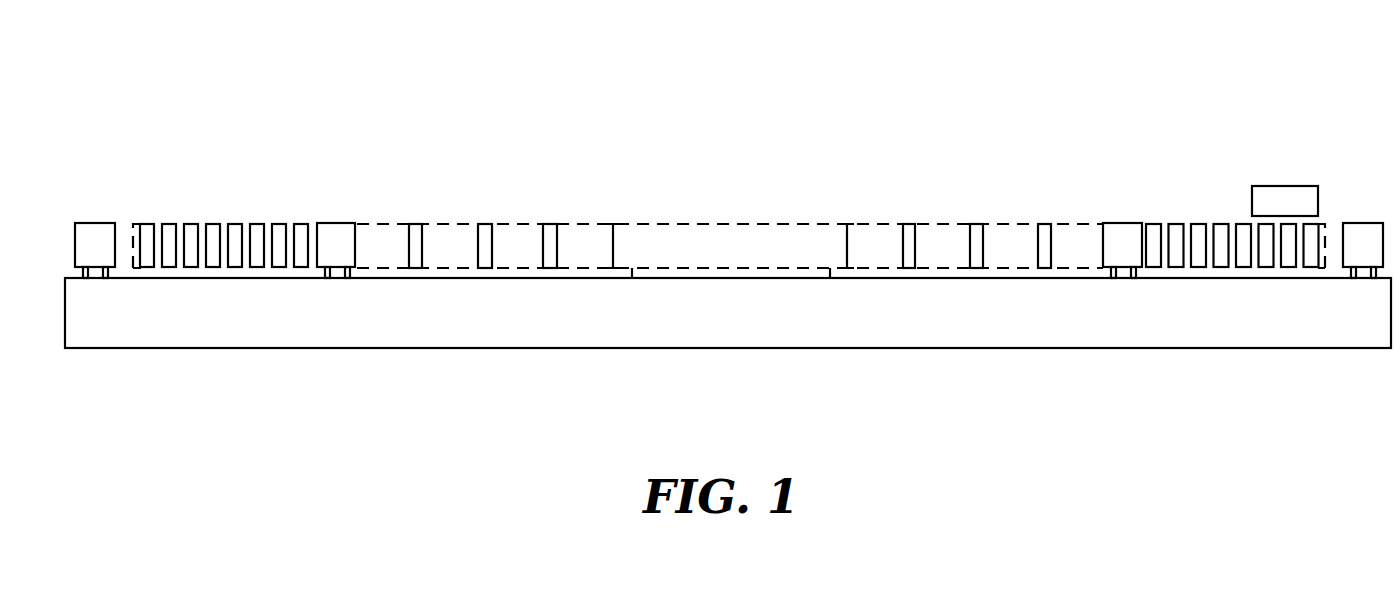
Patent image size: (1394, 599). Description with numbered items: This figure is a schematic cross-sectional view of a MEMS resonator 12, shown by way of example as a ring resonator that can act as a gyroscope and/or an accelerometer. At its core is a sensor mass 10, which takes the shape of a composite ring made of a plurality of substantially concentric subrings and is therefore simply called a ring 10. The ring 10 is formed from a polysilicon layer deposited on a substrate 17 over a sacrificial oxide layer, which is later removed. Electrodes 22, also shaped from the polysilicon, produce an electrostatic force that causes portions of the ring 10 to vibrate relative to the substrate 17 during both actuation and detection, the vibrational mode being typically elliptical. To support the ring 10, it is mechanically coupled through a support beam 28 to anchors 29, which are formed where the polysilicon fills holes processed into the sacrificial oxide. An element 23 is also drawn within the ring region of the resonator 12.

The sensor mass 10 is at (133, 192).
The MEMS resonator 12 is at (928, 118).
The substrate 17 is at (666, 325).
The electrodes 22 is at (93, 222).
The element on array 23 is at (1277, 203).
The support beam 28 is at (733, 222).
The anchors 29 is at (93, 276).